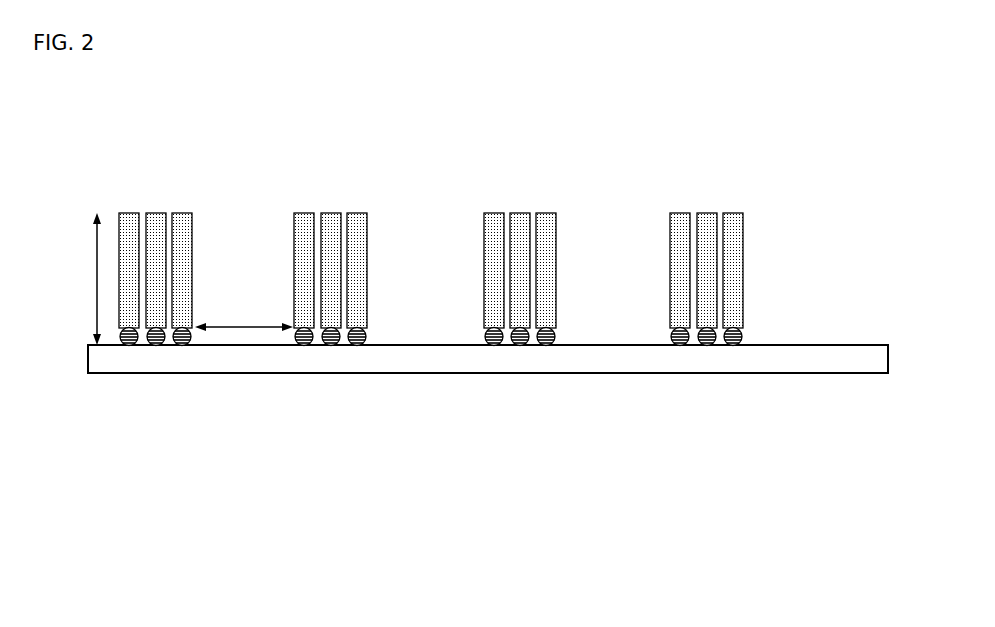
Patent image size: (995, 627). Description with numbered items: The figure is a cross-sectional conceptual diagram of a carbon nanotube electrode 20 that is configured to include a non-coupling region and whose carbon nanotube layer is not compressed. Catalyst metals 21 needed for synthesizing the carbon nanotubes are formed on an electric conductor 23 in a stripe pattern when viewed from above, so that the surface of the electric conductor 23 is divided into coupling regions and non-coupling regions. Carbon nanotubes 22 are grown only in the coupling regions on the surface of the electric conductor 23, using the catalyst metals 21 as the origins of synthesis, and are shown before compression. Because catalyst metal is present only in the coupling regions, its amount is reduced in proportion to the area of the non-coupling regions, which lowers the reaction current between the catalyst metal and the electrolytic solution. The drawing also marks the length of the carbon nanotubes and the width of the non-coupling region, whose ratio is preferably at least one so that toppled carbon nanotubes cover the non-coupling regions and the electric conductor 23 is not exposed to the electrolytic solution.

The carbon nanotube electrode 20 is at (180, 587).
The carbon nanotube synthesis catalyst metallic particle 21 is at (294, 342).
The carbon nanotube 22 is at (305, 225).
The electric conductor 23 is at (438, 367).